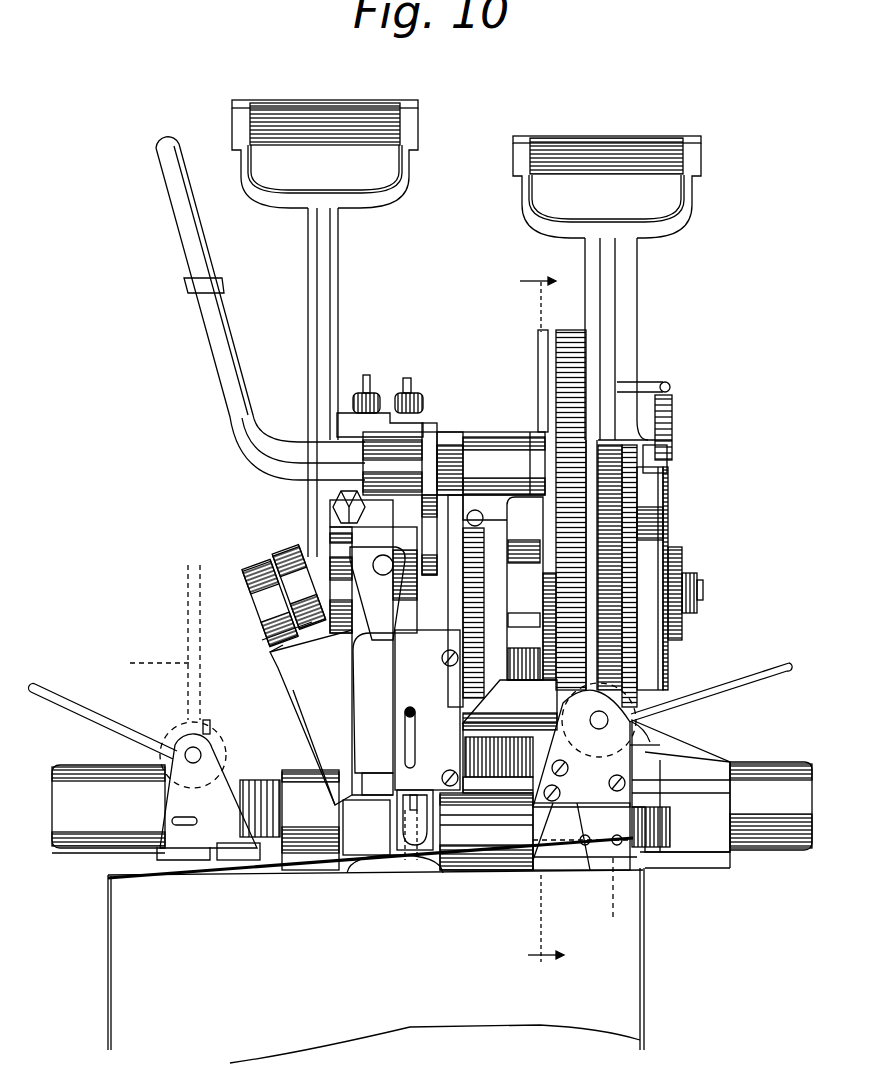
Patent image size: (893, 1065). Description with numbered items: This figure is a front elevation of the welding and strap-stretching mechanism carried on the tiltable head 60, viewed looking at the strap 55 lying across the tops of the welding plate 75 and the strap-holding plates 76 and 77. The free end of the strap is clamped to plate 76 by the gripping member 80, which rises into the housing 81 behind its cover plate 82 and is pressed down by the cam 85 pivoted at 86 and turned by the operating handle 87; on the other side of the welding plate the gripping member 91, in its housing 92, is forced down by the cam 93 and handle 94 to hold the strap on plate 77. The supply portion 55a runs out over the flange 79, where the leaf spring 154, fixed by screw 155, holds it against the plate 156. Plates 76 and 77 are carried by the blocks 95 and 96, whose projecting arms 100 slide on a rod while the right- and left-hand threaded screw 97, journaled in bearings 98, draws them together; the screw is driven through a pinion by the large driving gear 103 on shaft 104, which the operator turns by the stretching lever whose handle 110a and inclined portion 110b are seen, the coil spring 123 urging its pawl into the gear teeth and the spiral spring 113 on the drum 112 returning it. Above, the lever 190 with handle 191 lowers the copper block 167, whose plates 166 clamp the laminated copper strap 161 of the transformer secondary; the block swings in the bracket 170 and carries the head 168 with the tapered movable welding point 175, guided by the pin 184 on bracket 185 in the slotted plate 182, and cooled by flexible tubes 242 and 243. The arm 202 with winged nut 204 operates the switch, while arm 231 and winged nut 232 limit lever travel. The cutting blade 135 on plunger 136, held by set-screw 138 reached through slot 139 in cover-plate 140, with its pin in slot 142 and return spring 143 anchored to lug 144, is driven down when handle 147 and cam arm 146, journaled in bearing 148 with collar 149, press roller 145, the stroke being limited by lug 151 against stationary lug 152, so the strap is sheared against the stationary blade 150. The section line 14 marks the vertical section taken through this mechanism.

The handle 191 is at (285, 103).
The lever 190 is at (310, 256).
The handle of the lever 110a is at (664, 137).
The upwardly inclined portion of the lever 110b is at (622, 272).
The large driving gear 103 is at (584, 338).
The section line 14 is at (542, 621).
The coil spring 123 is at (672, 410).
The head 60 is at (512, 583).
The hub or drum 112 is at (650, 577).
The spiral spring 113 is at (660, 580).
The shaft 104 is at (703, 584).
The handle 147 is at (226, 404).
The arm 202 is at (438, 405).
The winged nut 232 is at (365, 393).
The winged nut 204 is at (405, 392).
The arm 231 is at (360, 422).
The lug 151 is at (446, 432).
The stationary lug 152 is at (463, 440).
The bearing 148 is at (485, 432).
The collar 149 is at (541, 430).
The cam arm 146 is at (440, 503).
The lug 144 is at (487, 511).
The coil spring 143 is at (477, 672).
The roller 145 is at (338, 508).
The plates 166 is at (335, 510).
The laminated copper strap 161 is at (343, 597).
The flexible tube 242 is at (250, 575).
The flexible tube 243 is at (276, 553).
The pin 184 is at (320, 587).
The block 167 is at (287, 631).
The bracket 185 is at (350, 628).
The head 168 is at (300, 690).
The plate 182 is at (372, 645).
The cover-plate 140 is at (408, 678).
The slot 142 is at (462, 718).
The plunger 136 is at (425, 656).
The slot 139 is at (407, 748).
The set-screw 138 is at (405, 713).
The operating handle 94 is at (83, 700).
The pivoted cam 93 is at (172, 778).
The housing 92 is at (223, 822).
The gripping member 91 is at (200, 856).
The projecting arms 100 is at (100, 850).
The block 96 is at (125, 855).
The screw 97 is at (270, 852).
The bearings 98 is at (315, 850).
The strap-holding plate 77 is at (240, 862).
The welding plate 75 is at (395, 870).
The stationary cutting blade 150 is at (428, 852).
The cutting blade 135 is at (410, 812).
The bracket 170 is at (362, 762).
The movable welding point 175 is at (372, 795).
The gripping member 80 is at (557, 823).
The strap-holding plate 76 is at (570, 870).
The flange 79 is at (606, 901).
The plate 156 is at (640, 868).
The block 95 is at (705, 873).
The supply portion of the strap 55a is at (730, 868).
The leaf spring 154 is at (650, 793).
The cam 85 is at (581, 748).
The pivot 86 is at (608, 715).
The operating handle 87 is at (781, 668).
The front cover plate 82 is at (645, 731).
The screw 155 is at (632, 765).
The housing 81 is at (657, 748).
The strap 55 is at (108, 1036).